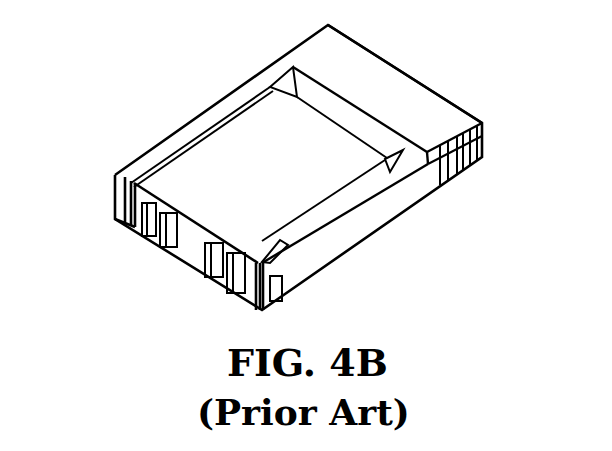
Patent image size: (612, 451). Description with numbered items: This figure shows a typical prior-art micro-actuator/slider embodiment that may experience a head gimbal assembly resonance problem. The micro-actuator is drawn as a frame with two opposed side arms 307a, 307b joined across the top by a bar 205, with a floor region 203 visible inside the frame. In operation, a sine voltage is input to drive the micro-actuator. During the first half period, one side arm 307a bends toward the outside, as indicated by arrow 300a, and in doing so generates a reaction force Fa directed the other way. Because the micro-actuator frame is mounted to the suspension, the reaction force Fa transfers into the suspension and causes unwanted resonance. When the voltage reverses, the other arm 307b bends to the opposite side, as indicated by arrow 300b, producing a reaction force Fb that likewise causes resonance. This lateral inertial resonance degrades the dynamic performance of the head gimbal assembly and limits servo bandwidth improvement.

The substrate / floor 203 is at (233, 135).
The bar member 205 is at (382, 90).
The side arm 307a is at (257, 75).
The other arm 307b is at (387, 203).
The arrow 300a is at (130, 148).
The arrow 300b is at (335, 273).
The reaction force Fa is at (348, 68).
The reaction force Fb is at (418, 107).